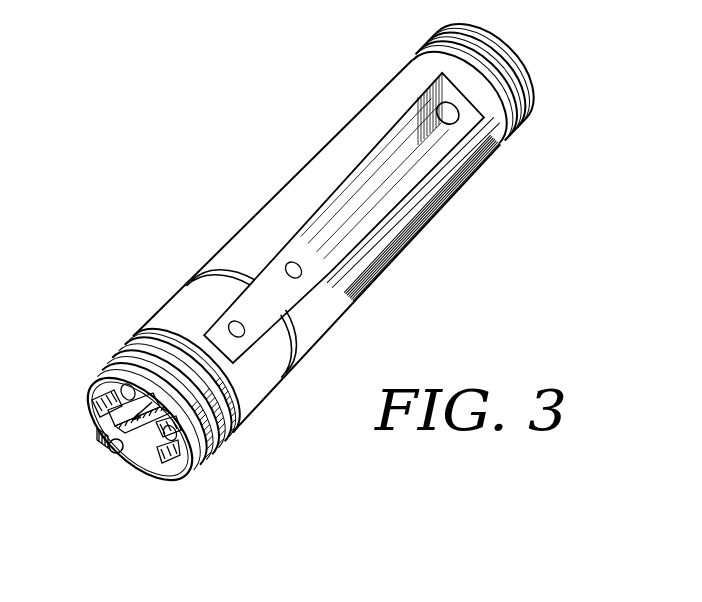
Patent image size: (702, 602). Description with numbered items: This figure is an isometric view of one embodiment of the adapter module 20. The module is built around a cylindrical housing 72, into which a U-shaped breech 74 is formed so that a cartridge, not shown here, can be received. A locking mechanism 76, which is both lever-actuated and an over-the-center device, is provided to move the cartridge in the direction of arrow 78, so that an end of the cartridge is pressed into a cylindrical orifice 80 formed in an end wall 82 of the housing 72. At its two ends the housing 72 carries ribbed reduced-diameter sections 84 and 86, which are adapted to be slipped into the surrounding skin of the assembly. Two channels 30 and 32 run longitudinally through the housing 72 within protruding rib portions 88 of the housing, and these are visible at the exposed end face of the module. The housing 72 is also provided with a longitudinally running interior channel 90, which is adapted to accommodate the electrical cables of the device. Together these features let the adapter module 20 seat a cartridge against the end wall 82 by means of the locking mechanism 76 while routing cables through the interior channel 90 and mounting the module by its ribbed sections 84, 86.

The adapter module 20 is at (276, 188).
The channel 30 is at (117, 456).
The channel 32 is at (121, 398).
The cylindrical housing 72 is at (324, 238).
The U-shaped breech 74 is at (347, 225).
The locking mechanism 76 is at (251, 313).
The arrow 78 is at (340, 217).
The cylindrical orifice 80 is at (447, 113).
The end wall 82 is at (478, 124).
The ribbed reduced-diameter section 84 is at (482, 74).
The ribbed reduced-diameter section 86 is at (163, 405).
The protruding rib portions 88 is at (112, 428).
The interior channel 90 is at (97, 446).